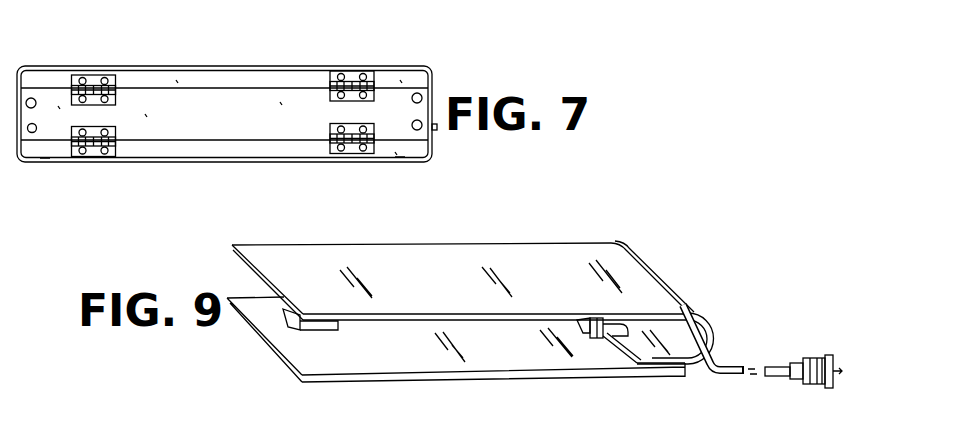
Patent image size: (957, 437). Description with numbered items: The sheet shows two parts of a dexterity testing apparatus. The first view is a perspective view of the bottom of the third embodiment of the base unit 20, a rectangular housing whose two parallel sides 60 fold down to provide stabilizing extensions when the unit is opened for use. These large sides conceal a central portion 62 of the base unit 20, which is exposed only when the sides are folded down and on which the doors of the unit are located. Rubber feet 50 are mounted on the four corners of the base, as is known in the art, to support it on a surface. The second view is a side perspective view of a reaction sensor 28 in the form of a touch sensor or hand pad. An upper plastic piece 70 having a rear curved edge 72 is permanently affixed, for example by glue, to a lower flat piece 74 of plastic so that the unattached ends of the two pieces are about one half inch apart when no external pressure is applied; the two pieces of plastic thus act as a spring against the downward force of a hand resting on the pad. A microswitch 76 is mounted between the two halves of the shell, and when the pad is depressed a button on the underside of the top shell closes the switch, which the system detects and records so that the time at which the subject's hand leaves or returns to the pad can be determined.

In FIG. 7, the base unit 20 is at (292, 54).
In FIG. 7, the rubber feet 50 is at (44, 96).
In FIG. 7, the parallel sides 60 is at (216, 78).
In FIG. 7, the central portion 62 is at (53, 130).
In FIG. 9, the reaction sensor 28 is at (652, 254).
In FIG. 9, the upper plastic piece 70 is at (451, 261).
In FIG. 9, the rear curved edge 72 is at (713, 334).
In FIG. 9, the lower flat piece 74 is at (331, 362).
In FIG. 9, the microswitch 76 is at (331, 331).